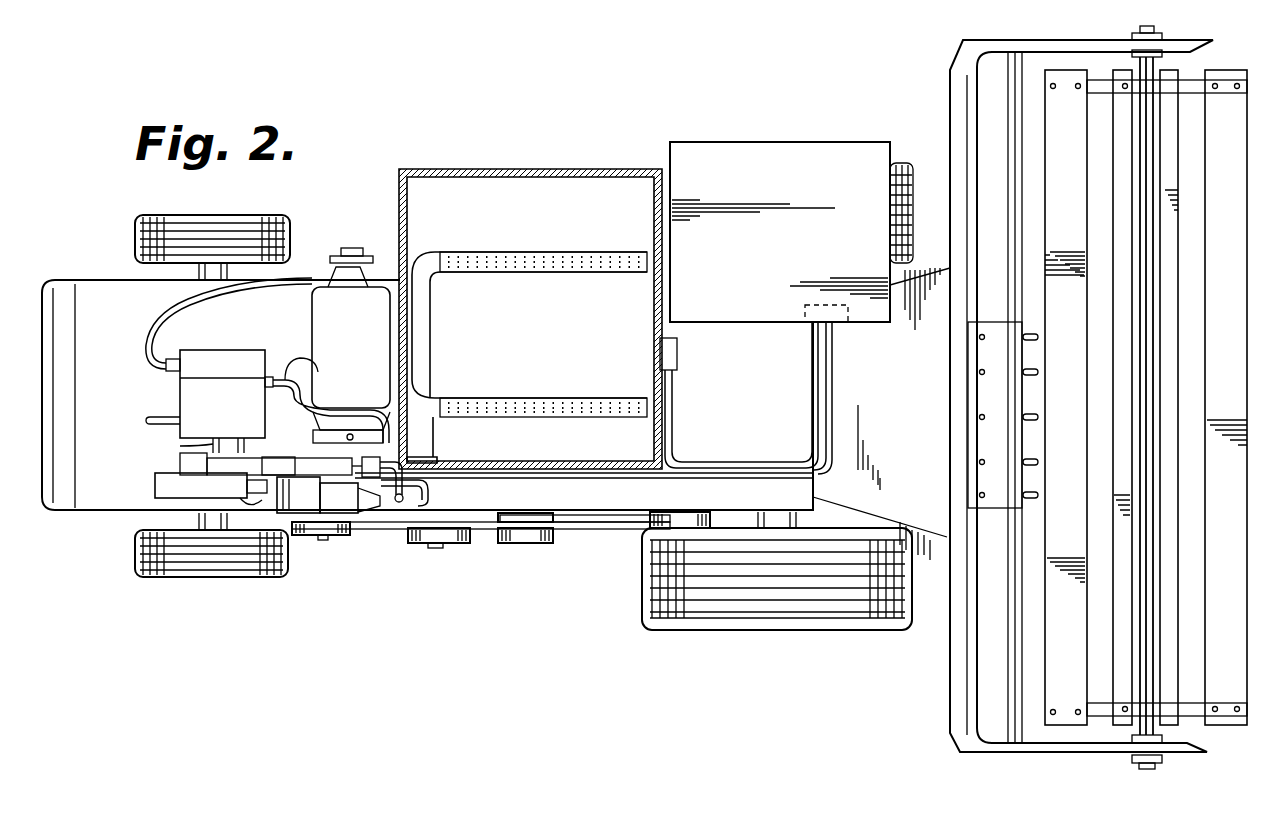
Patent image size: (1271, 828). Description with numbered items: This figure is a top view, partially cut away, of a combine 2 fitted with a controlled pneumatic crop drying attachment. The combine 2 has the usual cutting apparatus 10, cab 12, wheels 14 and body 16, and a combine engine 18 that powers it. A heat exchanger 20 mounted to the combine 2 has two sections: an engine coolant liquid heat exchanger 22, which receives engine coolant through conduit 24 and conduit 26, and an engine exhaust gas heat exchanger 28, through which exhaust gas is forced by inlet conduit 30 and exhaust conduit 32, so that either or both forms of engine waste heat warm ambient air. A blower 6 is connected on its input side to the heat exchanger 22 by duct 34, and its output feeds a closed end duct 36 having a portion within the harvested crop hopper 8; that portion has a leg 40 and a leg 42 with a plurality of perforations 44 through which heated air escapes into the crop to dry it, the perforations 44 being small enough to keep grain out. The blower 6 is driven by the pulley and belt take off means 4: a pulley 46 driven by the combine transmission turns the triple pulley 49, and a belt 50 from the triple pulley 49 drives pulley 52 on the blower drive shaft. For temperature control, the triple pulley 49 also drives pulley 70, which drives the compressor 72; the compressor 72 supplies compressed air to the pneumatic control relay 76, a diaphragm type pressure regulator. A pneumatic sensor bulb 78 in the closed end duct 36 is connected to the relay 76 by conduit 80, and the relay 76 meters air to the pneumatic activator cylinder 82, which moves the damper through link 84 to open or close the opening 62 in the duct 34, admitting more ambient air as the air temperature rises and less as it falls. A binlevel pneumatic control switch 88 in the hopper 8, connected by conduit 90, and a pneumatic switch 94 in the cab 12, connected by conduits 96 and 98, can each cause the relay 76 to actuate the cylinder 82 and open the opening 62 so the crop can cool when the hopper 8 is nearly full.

The combine 2 is at (582, 166).
The pulley and belt take off means 4 is at (416, 548).
The blower 6 is at (328, 495).
The hopper 8 is at (535, 331).
The cutting apparatus 10 is at (925, 413).
The cab 12 is at (780, 232).
The wheels 14 is at (139, 216).
The body 16 is at (43, 462).
The combine engine 18 is at (398, 450).
The heat exchanger 20 is at (172, 390).
The engine coolant liquid heat exchanger 22 is at (217, 350).
The conduit 24 is at (293, 368).
The conduit 26 is at (184, 325).
The engine exhaust gas heat exchanger 28 is at (225, 427).
The inlet conduit 30 is at (265, 395).
The exhaust conduit 32 is at (150, 422).
The duct 34 is at (205, 447).
The closed end duct 36 is at (430, 350).
The leg 40 is at (625, 400).
The leg 42 is at (590, 252).
The perforations 44 is at (450, 266).
The pulley 46 is at (470, 543).
The triple pulley 49 is at (553, 543).
The belt 50 is at (372, 533).
The pulley 52 is at (337, 536).
The opening 62 is at (290, 457).
The pulley 70 is at (713, 490).
The compressor 72 is at (620, 525).
The pneumatic control relay 76 is at (362, 466).
The pneumatic sensor bulb 78 is at (415, 503).
The conduit 80 is at (427, 482).
The pneumatic activator cylinder 82 is at (157, 490).
The link 84 is at (240, 497).
The binlevel pneumatic control switch 88 is at (677, 360).
The conduit 90 is at (595, 475).
The pneumatic switch 94 is at (805, 318).
The conduit 96 is at (845, 330).
The conduit 98 is at (812, 343).